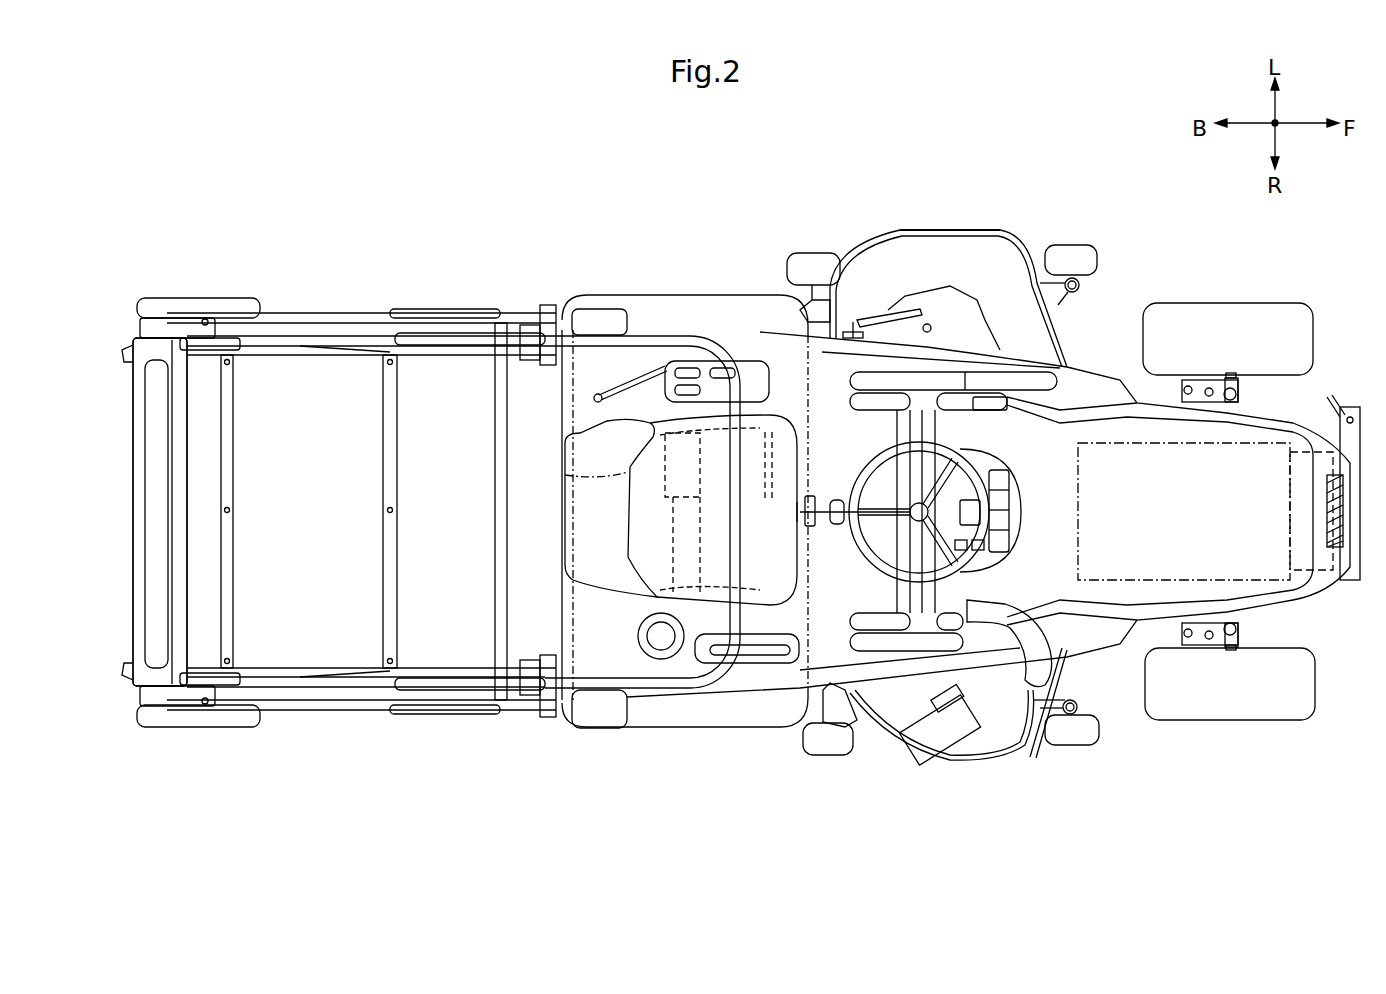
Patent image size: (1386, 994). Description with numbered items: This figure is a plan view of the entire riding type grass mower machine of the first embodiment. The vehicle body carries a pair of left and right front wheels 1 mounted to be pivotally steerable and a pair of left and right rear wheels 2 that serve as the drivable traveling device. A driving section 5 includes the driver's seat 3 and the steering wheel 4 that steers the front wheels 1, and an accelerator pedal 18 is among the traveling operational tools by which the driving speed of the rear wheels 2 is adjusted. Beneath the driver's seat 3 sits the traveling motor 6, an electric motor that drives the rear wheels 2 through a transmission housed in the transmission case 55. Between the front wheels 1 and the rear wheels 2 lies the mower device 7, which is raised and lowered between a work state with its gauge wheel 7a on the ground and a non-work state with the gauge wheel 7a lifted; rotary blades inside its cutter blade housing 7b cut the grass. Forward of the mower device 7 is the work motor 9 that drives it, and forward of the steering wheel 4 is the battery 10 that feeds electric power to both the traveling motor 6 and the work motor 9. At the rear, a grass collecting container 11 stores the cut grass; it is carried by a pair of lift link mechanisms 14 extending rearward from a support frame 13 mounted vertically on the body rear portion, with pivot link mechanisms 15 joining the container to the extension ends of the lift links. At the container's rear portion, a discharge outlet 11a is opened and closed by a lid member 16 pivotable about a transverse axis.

The front wheels 1 is at (1232, 305).
The rear wheels 2 is at (690, 297).
The driver's seat 3 is at (583, 545).
The steering wheel 4 is at (858, 470).
The driving section 5 is at (782, 400).
The traveling motor 6 is at (776, 518).
The mower device 7 is at (1010, 226).
The gauge wheel 7a is at (813, 262).
The cutter blade housing 7b is at (950, 250).
The work motor 9 is at (1290, 505).
The battery 10 is at (1255, 446).
The grass collecting container 11 is at (305, 392).
The discharge outlet 11a is at (160, 512).
The support frame 13 is at (600, 703).
The lift link mechanisms 14 is at (348, 310).
The pivot link mechanisms 15 is at (170, 297).
The lid member 16 is at (120, 395).
The accelerator pedal 18 is at (1040, 742).
The transmission case 55 is at (566, 468).